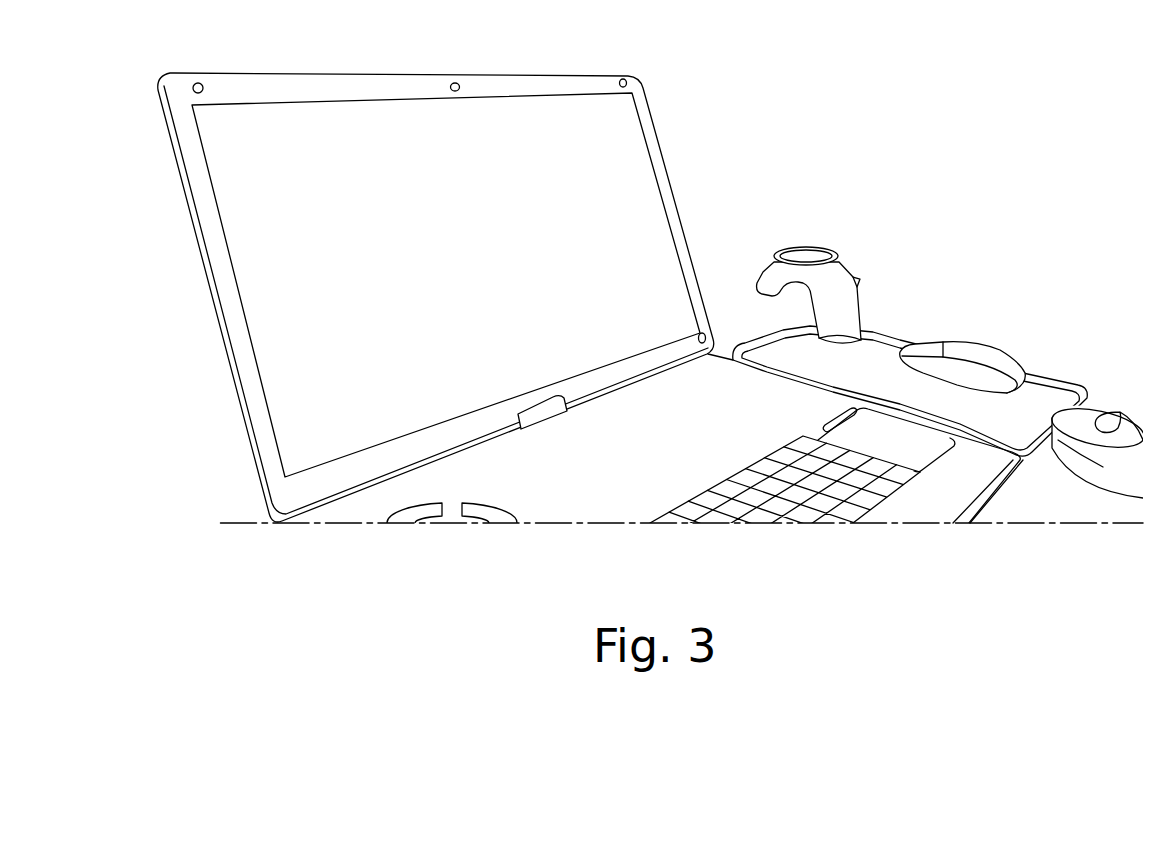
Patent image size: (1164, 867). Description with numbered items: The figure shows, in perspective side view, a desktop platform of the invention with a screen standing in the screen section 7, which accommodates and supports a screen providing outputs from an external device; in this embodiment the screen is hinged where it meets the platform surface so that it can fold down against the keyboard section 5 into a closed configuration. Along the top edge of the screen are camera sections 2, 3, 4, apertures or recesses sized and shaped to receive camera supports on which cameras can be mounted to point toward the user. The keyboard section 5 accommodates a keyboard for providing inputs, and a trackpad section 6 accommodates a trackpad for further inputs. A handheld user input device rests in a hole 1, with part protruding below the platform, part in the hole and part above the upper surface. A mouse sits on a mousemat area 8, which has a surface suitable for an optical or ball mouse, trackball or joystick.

The hole 1 is at (866, 336).
The camera section 2 is at (201, 84).
The camera section 3 is at (458, 83).
The camera section 4 is at (627, 79).
The keyboard section 5 is at (883, 490).
The trackpad section 6 is at (990, 473).
The screen section 7 is at (240, 343).
The mousemat area 8 is at (952, 398).